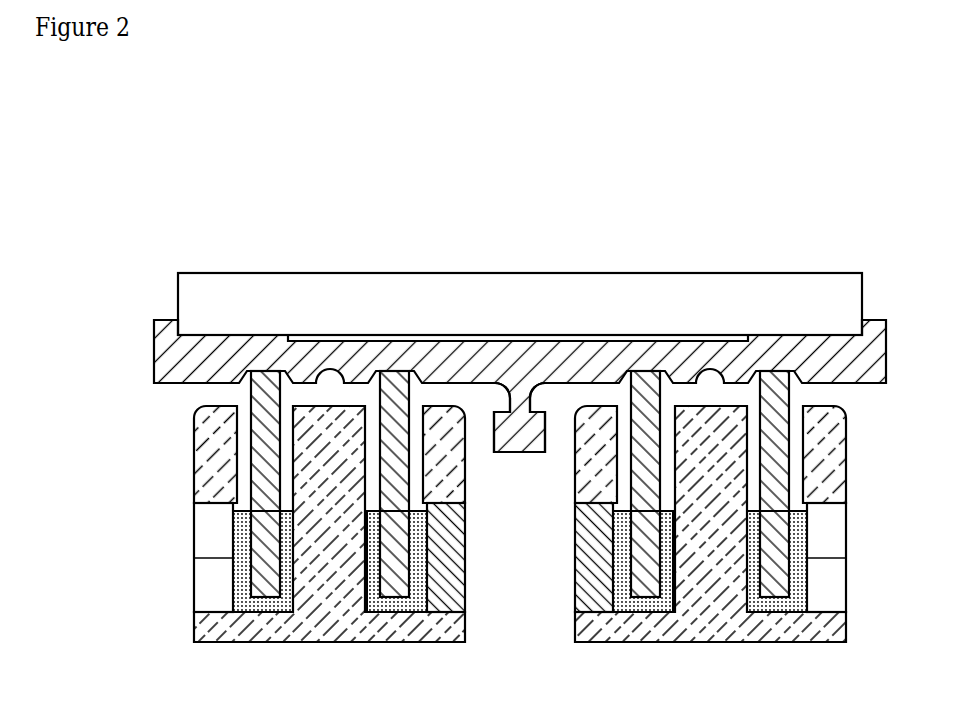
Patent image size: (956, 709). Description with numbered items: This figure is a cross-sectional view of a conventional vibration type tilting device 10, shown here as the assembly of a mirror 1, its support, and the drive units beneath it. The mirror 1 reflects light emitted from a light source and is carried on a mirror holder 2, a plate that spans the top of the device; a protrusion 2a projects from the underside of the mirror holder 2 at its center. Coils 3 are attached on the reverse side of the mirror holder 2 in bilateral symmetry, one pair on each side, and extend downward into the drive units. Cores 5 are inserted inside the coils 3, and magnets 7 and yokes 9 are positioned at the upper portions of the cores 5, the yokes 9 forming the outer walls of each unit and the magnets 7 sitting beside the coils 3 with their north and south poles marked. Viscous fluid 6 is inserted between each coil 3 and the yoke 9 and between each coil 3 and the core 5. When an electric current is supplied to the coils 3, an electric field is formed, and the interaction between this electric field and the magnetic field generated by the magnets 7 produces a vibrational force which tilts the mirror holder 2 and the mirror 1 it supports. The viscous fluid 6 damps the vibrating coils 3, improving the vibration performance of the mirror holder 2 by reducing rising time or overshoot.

The mirror 1 is at (293, 283).
The mirror holder 2 is at (168, 355).
The protrusion of mover plate 2a is at (520, 455).
The coil 3 is at (265, 563).
The core 5 is at (325, 583).
The viscous fluid 6 is at (413, 592).
The magnet 7 is at (840, 521).
The yoke 9 is at (830, 443).
The linear actuator 10 is at (822, 197).